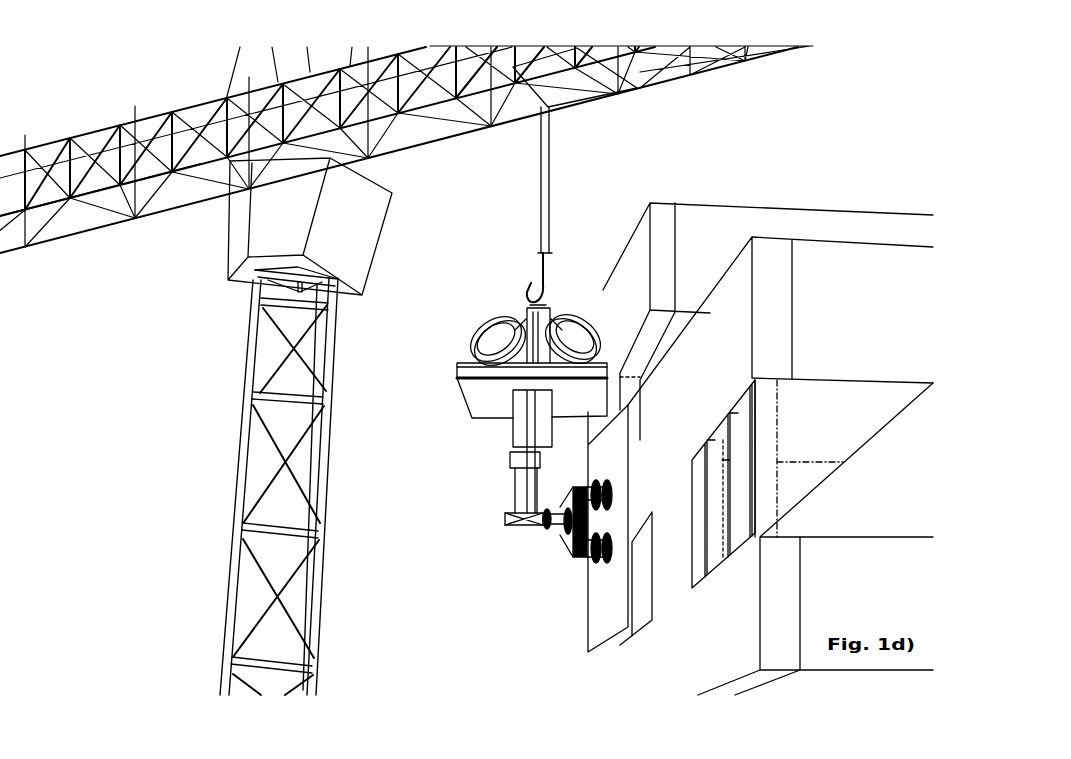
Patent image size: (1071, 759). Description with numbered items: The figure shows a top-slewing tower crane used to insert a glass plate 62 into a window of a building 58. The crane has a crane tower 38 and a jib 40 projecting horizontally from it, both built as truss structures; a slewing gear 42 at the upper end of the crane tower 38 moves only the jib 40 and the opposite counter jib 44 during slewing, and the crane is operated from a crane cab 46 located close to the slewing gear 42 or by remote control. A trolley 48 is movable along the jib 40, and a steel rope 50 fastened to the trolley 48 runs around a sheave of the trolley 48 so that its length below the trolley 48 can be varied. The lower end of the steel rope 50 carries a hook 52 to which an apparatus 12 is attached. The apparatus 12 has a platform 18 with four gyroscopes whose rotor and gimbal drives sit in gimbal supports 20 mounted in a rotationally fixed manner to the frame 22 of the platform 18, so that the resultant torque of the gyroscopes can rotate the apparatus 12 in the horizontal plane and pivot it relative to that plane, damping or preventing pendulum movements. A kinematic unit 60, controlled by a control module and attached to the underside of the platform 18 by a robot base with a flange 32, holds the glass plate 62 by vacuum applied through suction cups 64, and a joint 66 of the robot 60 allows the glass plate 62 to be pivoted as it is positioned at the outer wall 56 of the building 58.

The apparatus 12 is at (503, 358).
The platform 18 is at (482, 395).
The gimbal support 20 is at (490, 337).
The frame 22 is at (520, 318).
The flange 32 is at (535, 418).
The crane tower 38 is at (240, 528).
The jib 40 is at (727, 63).
The slewing gear 42 is at (230, 297).
The counter jib 44 is at (170, 208).
The crane cab 46 is at (367, 228).
The trolley 48 is at (563, 90).
The steel rope 50 is at (540, 200).
The hook 52 is at (563, 280).
The outer wall 56 is at (595, 680).
The building 58 is at (822, 226).
The kinematic unit 60 is at (518, 468).
The glass plate 62 is at (603, 612).
The suction cups 64 is at (603, 483).
The joint 66 is at (510, 525).